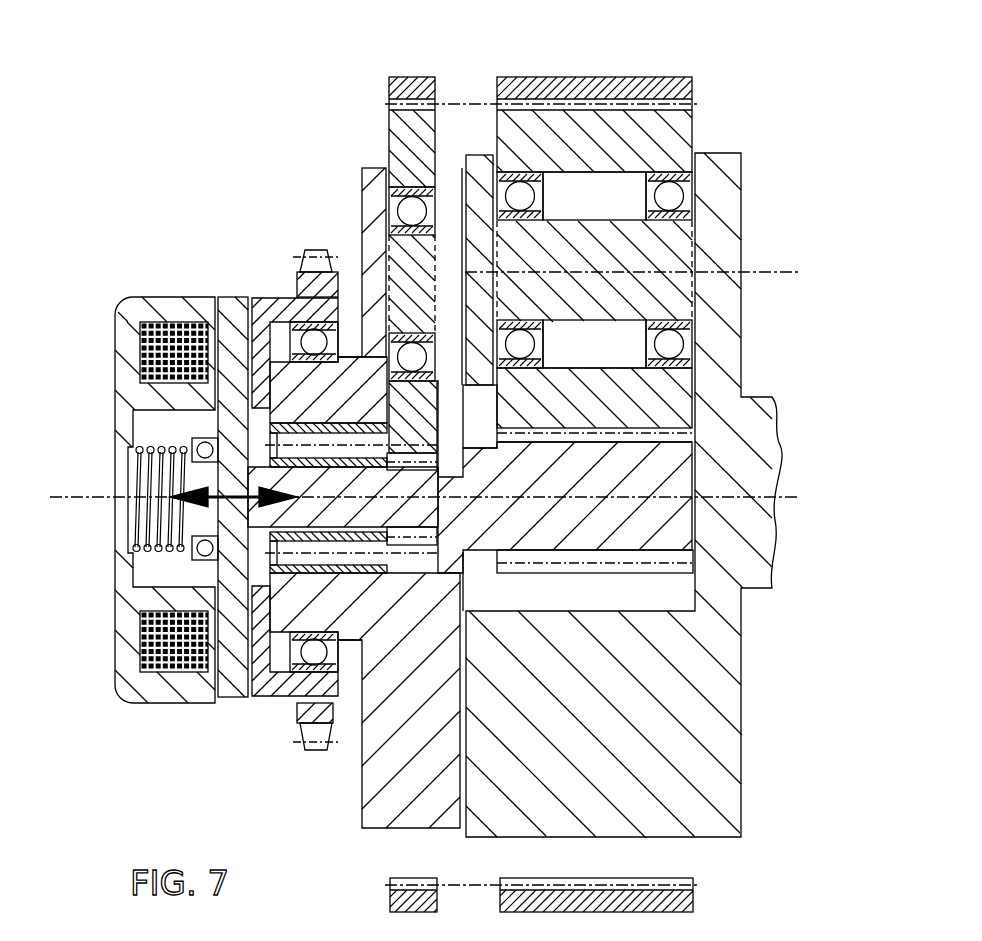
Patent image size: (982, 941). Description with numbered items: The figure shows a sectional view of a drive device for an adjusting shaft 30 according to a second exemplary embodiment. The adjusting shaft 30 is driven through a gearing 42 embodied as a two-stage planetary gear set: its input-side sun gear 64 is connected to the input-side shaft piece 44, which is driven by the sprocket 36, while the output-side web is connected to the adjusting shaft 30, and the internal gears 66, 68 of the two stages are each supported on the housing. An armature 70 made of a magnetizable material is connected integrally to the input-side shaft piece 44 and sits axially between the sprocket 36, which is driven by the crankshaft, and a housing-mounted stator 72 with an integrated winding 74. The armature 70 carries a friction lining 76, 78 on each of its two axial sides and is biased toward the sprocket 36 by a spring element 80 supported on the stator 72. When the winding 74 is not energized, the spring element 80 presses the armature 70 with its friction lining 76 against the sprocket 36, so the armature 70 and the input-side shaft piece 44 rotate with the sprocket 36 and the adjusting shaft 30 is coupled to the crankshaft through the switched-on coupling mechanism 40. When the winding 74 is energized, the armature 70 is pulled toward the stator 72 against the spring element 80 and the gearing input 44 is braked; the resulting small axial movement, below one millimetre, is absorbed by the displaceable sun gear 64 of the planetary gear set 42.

The adjusting shaft 30 is at (725, 693).
The sprocket 36 is at (314, 250).
The coupling mechanism 40 is at (185, 237).
The gearing 42 is at (545, 538).
The input-side shaft piece 44 is at (345, 522).
The input-side sun gear 64 is at (420, 478).
The internal gear 66 is at (414, 82).
The internal gear 68 is at (657, 82).
The armature 70 is at (238, 700).
The stator 72 is at (128, 300).
The winding 74 is at (173, 705).
The friction lining 76 is at (260, 703).
The friction lining 78 is at (216, 698).
The spring element 80 is at (140, 468).